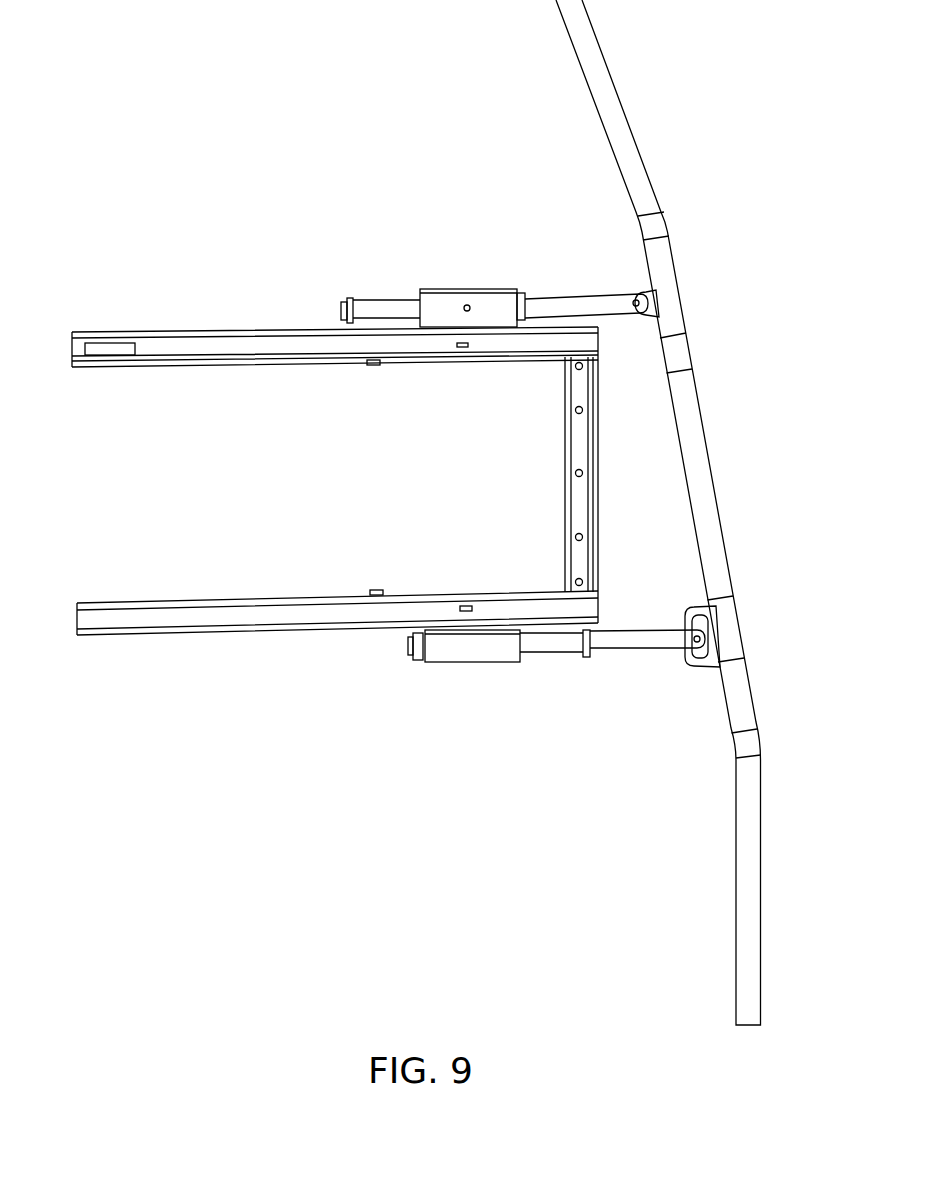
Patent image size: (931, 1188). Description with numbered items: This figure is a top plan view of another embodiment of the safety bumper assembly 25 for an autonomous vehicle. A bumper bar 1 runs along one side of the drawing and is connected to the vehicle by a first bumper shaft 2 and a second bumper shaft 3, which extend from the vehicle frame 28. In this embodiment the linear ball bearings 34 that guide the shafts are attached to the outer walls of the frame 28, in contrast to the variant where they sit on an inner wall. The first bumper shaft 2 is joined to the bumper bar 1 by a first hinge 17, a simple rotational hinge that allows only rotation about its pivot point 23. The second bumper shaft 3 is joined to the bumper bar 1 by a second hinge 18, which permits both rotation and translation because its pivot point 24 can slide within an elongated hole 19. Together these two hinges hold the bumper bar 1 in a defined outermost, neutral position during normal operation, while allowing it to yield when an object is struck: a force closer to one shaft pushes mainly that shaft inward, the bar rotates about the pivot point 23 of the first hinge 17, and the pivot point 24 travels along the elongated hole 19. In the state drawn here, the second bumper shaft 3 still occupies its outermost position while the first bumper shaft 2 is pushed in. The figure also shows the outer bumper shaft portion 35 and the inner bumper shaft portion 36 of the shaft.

The bumper bar 1 is at (622, 138).
The first bumper shaft 2 is at (550, 302).
The second bumper shaft 3 is at (627, 643).
The first hinge 17 is at (648, 292).
The second hinge 18 is at (712, 659).
The elongated hole 19 is at (700, 623).
The pivot point 23 is at (650, 308).
The pivot point 24 is at (699, 642).
The safety bumper assembly 25 is at (300, 222).
The vehicle frame 28 is at (215, 345).
The linear ball bearings 34 is at (487, 303).
The outer bumper shaft portion 35 is at (598, 293).
The inner bumper shaft portion 36 is at (387, 300).